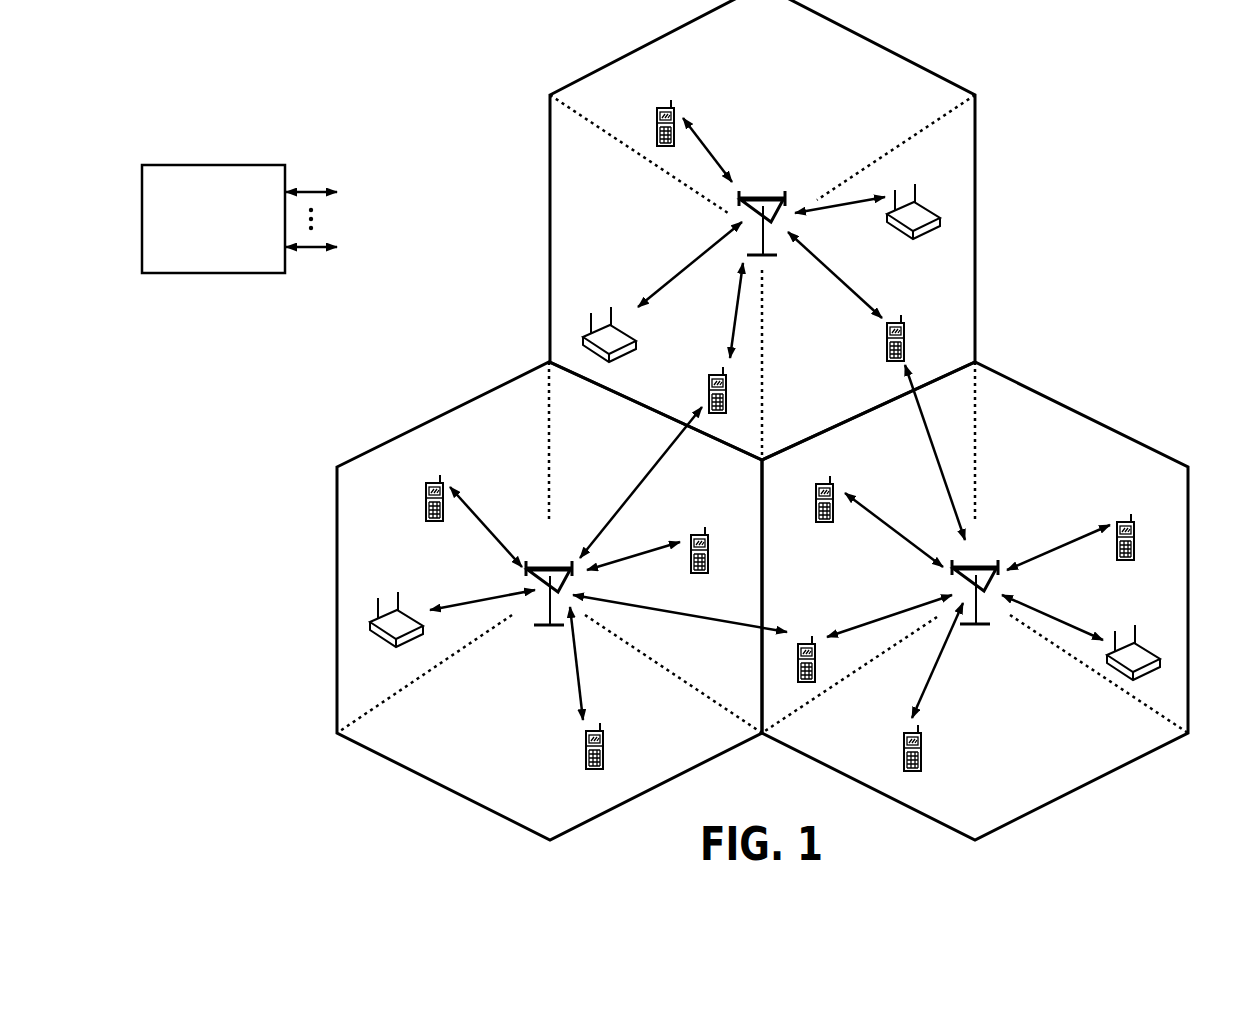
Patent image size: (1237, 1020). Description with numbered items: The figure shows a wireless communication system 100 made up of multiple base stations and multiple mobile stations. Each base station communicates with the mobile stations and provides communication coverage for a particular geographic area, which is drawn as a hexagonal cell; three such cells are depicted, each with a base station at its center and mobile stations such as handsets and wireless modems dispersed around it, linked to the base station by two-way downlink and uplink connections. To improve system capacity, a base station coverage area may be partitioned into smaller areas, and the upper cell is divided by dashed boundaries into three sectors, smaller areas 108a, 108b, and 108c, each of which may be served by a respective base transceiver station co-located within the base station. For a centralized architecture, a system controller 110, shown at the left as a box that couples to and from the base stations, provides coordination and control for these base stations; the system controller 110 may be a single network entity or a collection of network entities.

The wireless communication system 100 is at (1124, 52).
The smaller area 108a is at (782, 46).
The smaller area 108b is at (607, 198).
The smaller area 108c is at (855, 403).
The system controller 110 is at (206, 165).